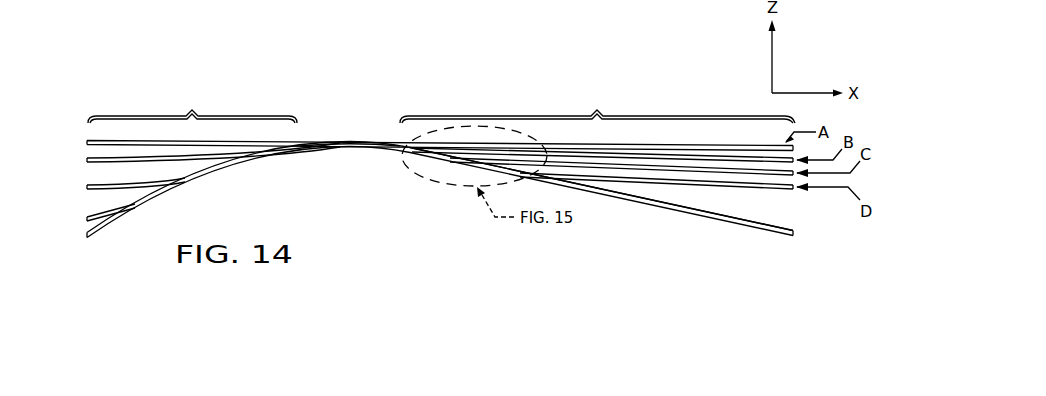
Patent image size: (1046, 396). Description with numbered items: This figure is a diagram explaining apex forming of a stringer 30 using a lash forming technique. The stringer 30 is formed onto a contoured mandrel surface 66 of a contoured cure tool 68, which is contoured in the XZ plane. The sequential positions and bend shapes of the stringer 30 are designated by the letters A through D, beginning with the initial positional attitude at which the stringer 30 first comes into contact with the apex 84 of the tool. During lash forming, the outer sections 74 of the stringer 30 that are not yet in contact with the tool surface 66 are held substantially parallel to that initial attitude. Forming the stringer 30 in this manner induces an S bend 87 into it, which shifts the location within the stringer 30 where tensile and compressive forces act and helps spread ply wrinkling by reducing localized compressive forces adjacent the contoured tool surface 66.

The stringer 30 is at (87, 142).
The contoured mandrel surface 66 is at (750, 211).
The contoured cure tool 68 is at (685, 213).
The outer sections 74 is at (441, 104).
The apex 84 is at (340, 122).
The S bend 87 is at (425, 187).